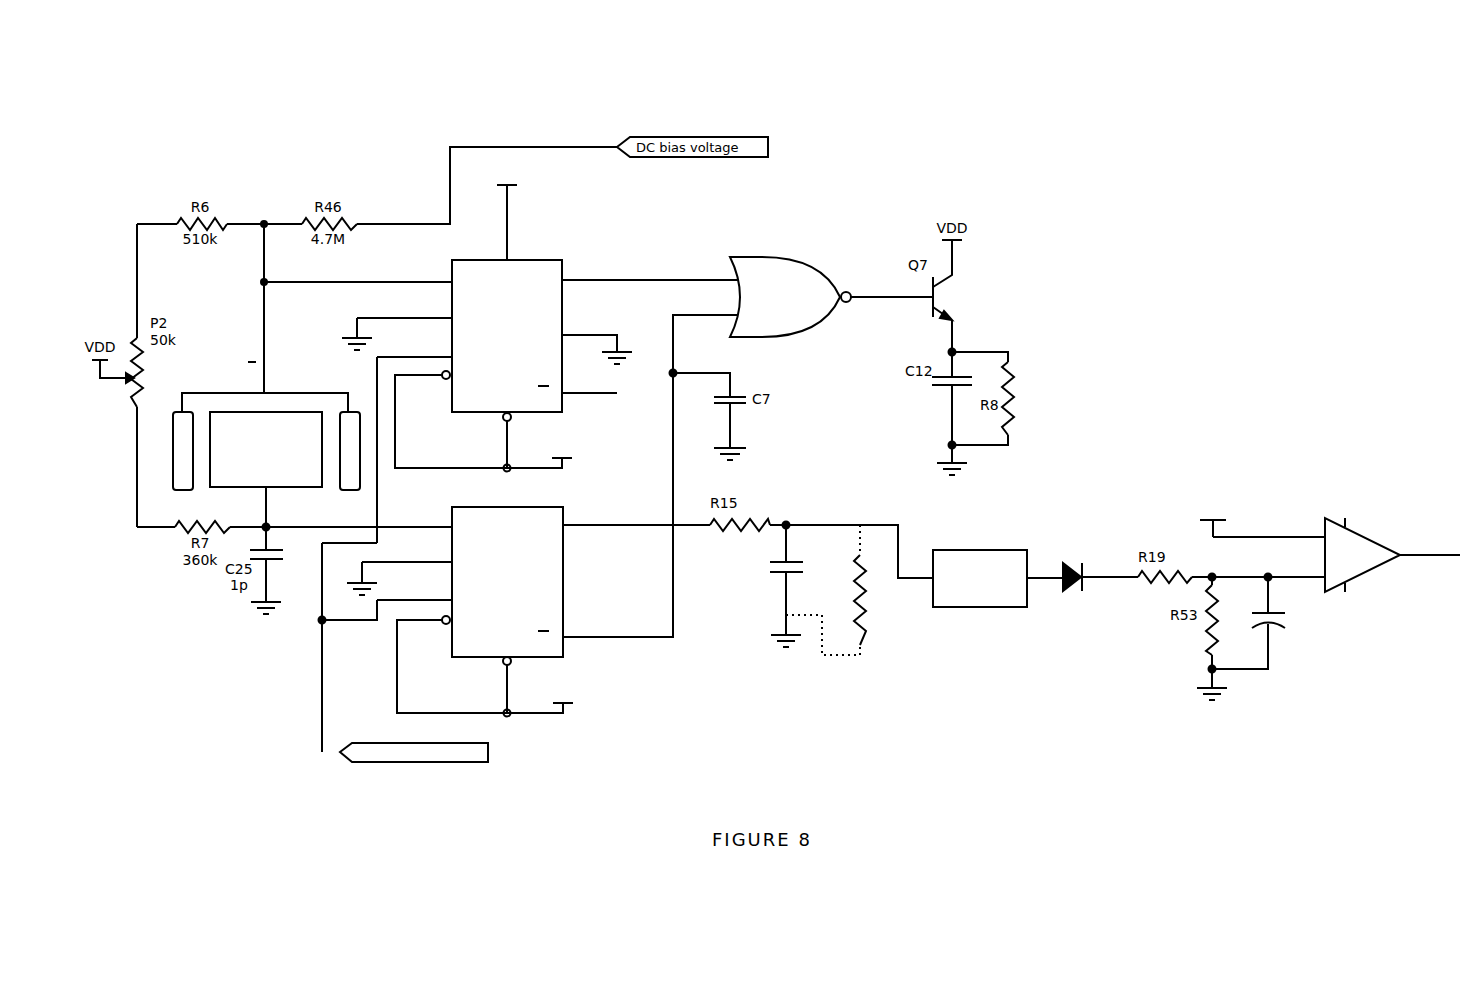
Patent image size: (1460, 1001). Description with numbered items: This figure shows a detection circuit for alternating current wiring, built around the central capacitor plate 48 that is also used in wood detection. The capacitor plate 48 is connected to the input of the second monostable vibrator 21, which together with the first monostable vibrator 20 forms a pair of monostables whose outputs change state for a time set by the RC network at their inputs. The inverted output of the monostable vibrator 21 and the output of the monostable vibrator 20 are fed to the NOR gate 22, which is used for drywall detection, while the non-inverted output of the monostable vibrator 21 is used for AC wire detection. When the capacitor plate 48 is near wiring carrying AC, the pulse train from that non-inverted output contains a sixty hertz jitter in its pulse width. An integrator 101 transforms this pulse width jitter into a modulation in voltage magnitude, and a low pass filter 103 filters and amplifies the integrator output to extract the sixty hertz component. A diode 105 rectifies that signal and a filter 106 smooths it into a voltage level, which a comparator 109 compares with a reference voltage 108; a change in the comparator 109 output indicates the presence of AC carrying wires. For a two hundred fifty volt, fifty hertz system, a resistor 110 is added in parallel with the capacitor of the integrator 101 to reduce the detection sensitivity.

The first monostable vibrator 20 is at (540, 354).
The second monostable vibrator 21 is at (529, 538).
The NOR gate 22 is at (773, 292).
The capacitor plate 48 is at (237, 465).
The integrator 101 is at (772, 595).
The low pass filter 103 is at (1000, 601).
The diode 105 is at (1072, 597).
The filter 106 is at (1245, 683).
The reference voltage 108 is at (1210, 500).
The comparator 109 is at (1358, 543).
The resistor 110 is at (885, 613).